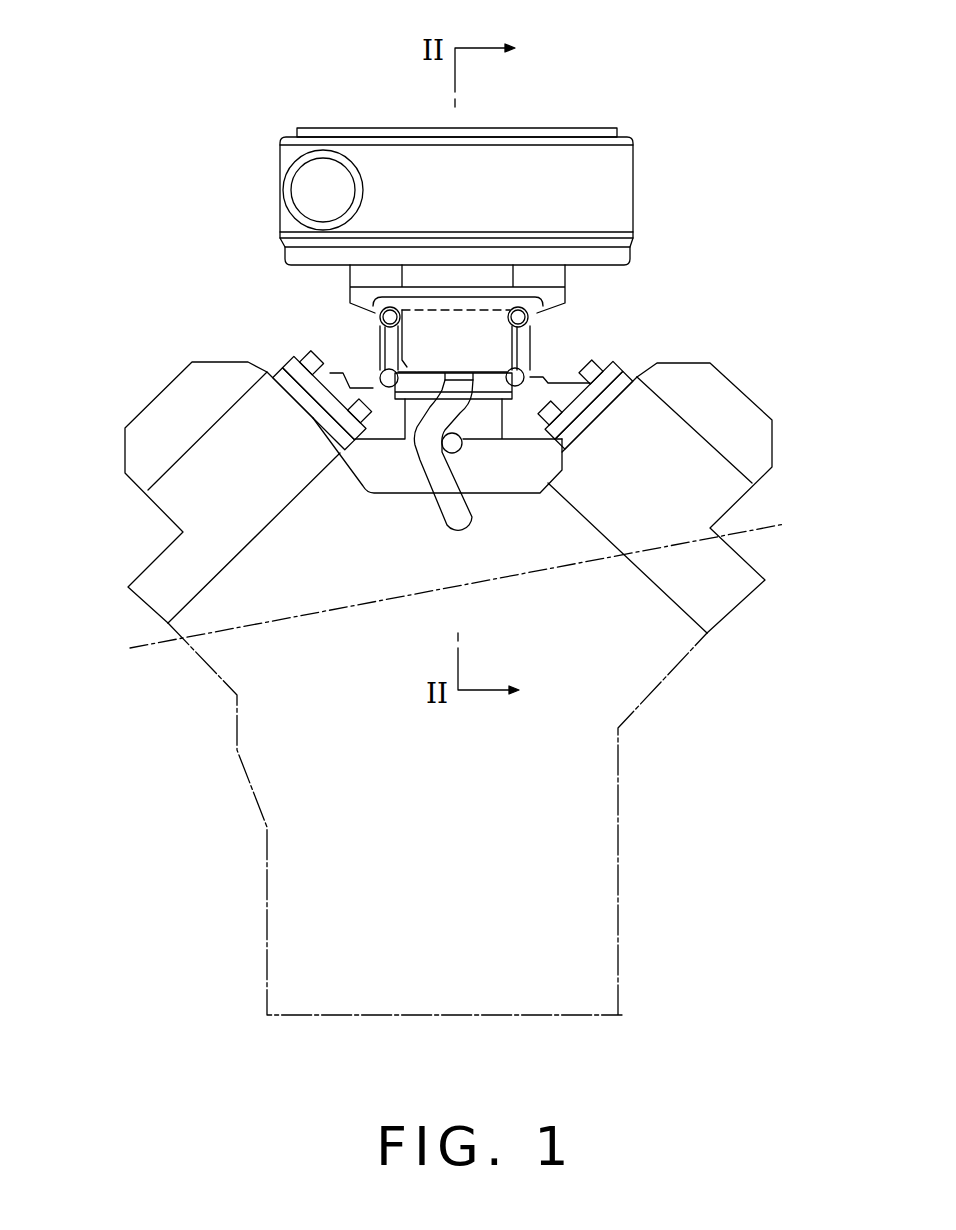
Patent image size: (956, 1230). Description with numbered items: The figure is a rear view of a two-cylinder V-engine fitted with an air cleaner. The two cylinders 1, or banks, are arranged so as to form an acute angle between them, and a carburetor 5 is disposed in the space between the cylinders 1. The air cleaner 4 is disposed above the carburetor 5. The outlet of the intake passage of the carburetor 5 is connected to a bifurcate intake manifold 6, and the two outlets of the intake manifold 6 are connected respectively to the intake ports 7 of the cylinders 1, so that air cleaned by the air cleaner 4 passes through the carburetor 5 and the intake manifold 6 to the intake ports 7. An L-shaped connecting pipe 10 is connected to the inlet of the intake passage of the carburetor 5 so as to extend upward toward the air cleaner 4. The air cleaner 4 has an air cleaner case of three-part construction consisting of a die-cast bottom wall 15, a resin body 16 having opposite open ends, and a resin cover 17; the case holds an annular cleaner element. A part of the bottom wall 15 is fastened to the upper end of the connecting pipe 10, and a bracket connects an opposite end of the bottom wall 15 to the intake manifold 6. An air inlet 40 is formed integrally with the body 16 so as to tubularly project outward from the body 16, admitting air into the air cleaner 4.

The cylinder 1 is at (257, 588).
The air cleaner 4 is at (450, 206).
The carburetor 5 is at (530, 338).
The intake manifold 6 is at (388, 425).
The intake port 7 is at (316, 422).
The connecting pipe 10 is at (402, 342).
The bottom wall 15 is at (315, 247).
The body 16 is at (607, 192).
The cover 17 is at (573, 128).
The air inlet 40 is at (313, 190).